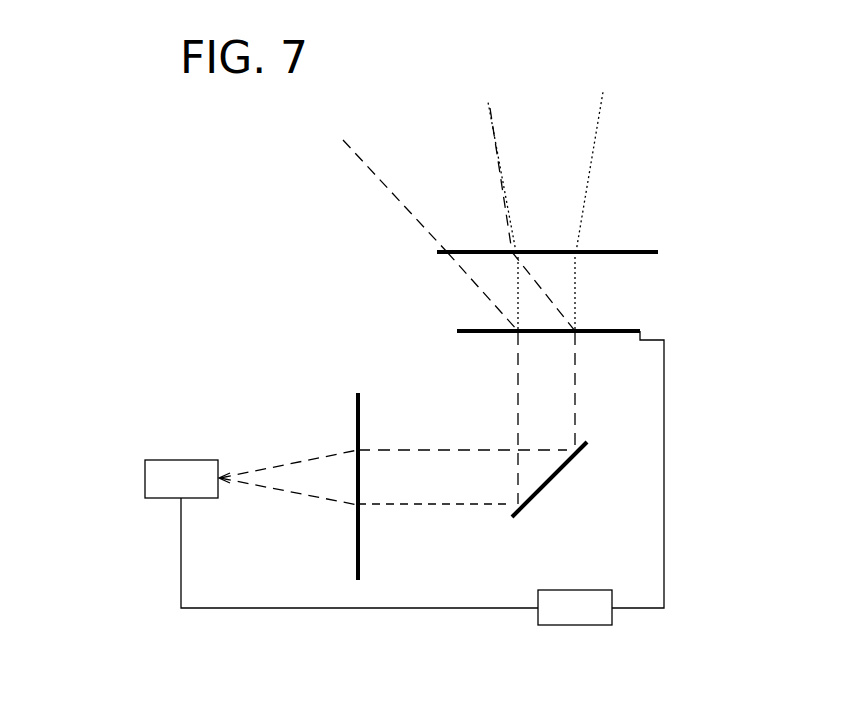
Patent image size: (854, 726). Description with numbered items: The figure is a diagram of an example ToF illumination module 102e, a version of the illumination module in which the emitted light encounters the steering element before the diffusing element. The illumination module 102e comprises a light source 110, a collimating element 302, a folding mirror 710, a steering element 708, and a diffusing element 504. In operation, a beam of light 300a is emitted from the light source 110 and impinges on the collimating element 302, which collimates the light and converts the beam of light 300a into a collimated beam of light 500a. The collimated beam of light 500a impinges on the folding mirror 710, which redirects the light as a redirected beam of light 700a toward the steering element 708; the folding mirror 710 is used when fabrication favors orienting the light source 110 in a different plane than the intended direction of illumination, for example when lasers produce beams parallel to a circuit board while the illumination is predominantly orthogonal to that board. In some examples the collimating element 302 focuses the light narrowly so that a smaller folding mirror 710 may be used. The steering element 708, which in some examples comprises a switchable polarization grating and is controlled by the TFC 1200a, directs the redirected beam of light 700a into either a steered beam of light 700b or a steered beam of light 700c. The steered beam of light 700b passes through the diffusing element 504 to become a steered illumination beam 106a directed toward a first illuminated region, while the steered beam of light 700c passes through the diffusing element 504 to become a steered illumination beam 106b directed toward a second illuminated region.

The ToF illumination module 102e is at (180, 240).
The steered illumination beam 106a is at (445, 161).
The steered illumination beam 106b is at (578, 143).
The diffusing element 504 is at (437, 251).
The steered beam of light 700b is at (488, 293).
The steered beam of light 700c is at (577, 283).
The steering element 708 is at (457, 331).
The redirected beam of light 700a is at (570, 400).
The collimating element 302 is at (361, 397).
The folding mirror 710 is at (578, 440).
The beam of light 300a is at (293, 462).
The collimated beam of light 500a is at (460, 502).
The light source 110 is at (198, 491).
The TFC 1200a is at (602, 621).